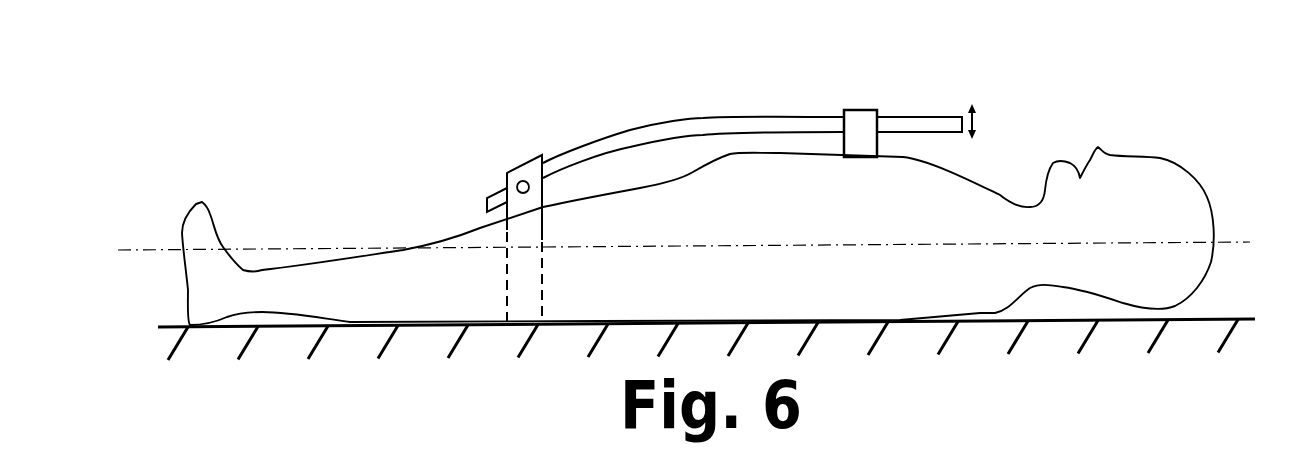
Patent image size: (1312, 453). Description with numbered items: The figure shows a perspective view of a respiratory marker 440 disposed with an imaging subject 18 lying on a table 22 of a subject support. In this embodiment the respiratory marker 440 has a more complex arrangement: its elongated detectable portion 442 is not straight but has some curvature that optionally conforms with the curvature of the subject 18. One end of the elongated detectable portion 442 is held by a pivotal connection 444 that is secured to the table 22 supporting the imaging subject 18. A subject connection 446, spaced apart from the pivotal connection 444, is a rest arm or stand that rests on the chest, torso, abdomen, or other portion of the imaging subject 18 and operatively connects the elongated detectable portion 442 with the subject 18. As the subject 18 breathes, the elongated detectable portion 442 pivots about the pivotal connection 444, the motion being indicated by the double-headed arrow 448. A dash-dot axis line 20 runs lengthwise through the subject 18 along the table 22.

The imaging subject 18 is at (442, 247).
The longitudinal axis 20 is at (1233, 240).
The table 22 is at (1223, 318).
The respiratory marker 440 is at (563, 63).
The elongated detectable portion 442 is at (570, 157).
The pivotal connection 444 is at (506, 187).
The subject connection 446 is at (862, 127).
The double-headed arrow 448 is at (980, 120).